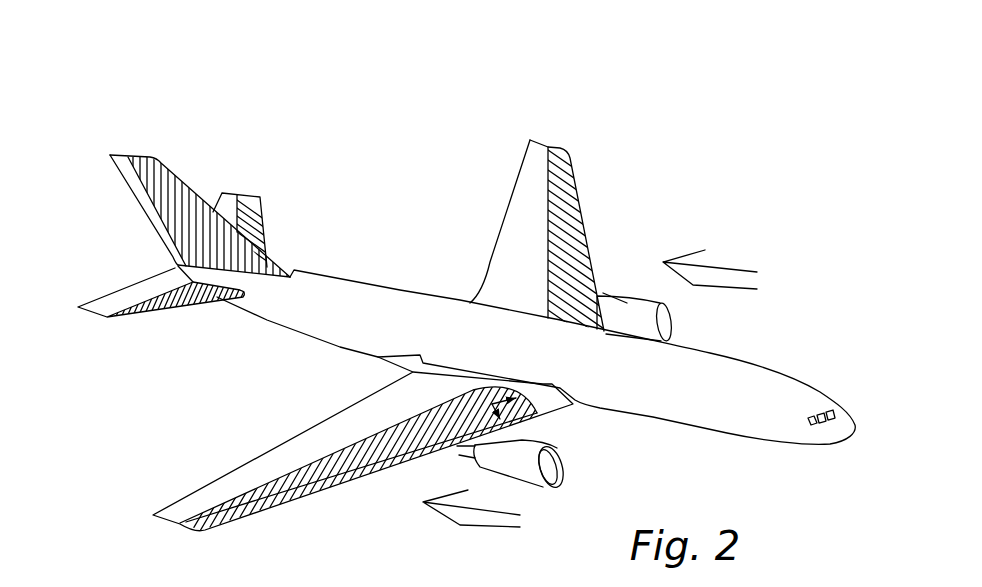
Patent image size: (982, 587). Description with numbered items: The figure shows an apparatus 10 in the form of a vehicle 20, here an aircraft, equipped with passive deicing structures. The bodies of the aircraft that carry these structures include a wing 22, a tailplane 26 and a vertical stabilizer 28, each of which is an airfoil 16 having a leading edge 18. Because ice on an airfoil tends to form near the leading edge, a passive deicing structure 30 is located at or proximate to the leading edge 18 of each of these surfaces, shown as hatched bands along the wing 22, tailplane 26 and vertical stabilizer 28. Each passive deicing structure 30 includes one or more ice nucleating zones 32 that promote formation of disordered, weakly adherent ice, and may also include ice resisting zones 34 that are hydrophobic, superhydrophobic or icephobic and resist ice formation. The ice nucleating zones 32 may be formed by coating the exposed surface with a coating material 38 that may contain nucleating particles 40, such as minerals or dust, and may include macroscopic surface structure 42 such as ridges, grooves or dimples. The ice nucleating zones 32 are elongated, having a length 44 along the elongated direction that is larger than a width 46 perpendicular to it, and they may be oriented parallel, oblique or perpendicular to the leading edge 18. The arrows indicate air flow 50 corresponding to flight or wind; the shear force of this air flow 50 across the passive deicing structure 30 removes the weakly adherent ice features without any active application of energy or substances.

The apparatus 10 is at (295, 44).
The vehicle 20 is at (317, 99).
The airfoil 16 is at (118, 152).
The leading edge 18 is at (184, 180).
The wing 22 is at (552, 144).
The tailplane 26 is at (246, 191).
The vertical stabilizer 28 is at (135, 152).
The passive deicing structure 30 is at (222, 195).
The ice nucleating zone 32 is at (280, 476).
The ice resisting zone 34 is at (317, 457).
The coating material 38 is at (348, 443).
The nucleating particles 40 is at (358, 430).
The surface structure 42 is at (370, 440).
The length 44 is at (494, 400).
The width 46 is at (462, 406).
The air flow 50 is at (757, 270).